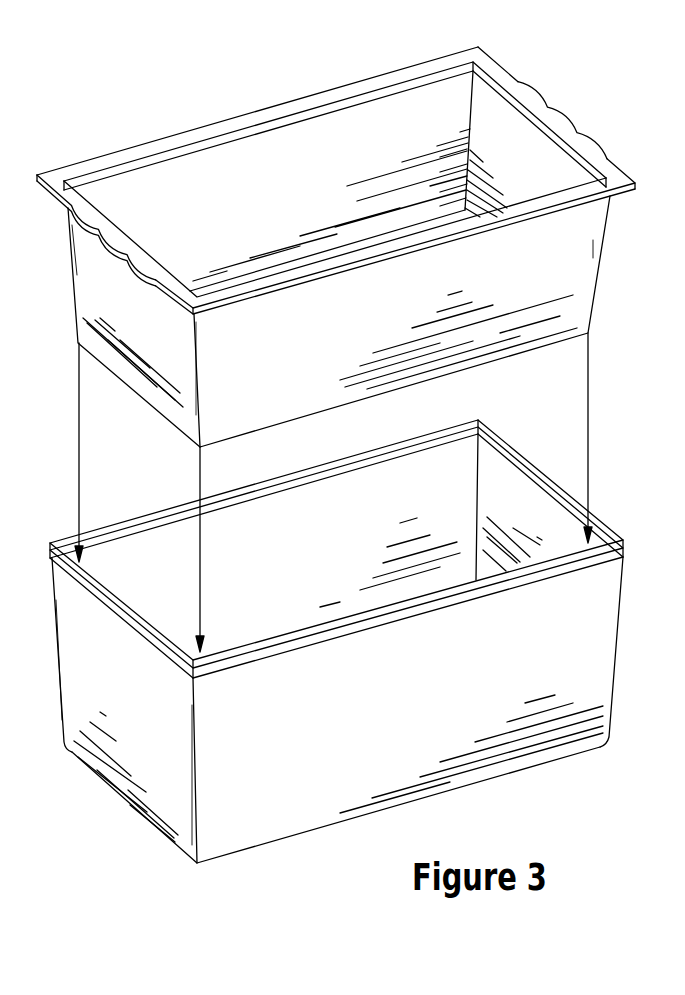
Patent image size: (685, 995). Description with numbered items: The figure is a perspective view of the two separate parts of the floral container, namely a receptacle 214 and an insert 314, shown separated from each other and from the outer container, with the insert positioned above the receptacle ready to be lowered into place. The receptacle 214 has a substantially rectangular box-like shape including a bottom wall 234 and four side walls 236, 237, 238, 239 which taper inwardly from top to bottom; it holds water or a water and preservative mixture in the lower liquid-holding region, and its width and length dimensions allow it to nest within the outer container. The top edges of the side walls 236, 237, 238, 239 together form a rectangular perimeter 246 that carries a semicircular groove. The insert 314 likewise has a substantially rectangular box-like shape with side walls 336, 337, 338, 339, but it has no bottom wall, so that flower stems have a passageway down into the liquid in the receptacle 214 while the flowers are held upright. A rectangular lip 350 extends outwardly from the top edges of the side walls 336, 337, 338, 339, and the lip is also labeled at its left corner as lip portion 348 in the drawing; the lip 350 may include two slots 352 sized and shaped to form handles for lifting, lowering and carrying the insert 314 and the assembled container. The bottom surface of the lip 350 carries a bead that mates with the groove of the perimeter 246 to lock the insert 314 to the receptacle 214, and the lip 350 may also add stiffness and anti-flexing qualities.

The receptacle 214 is at (498, 798).
The bottom wall 234 is at (240, 853).
The side wall 236 is at (143, 737).
The side wall 237 is at (163, 550).
The side wall 238 is at (512, 503).
The side wall 239 is at (528, 665).
The rectangular perimeter 246 is at (350, 448).
The insert 314 is at (290, 88).
The side wall 336 is at (165, 377).
The side wall 337 is at (207, 190).
The side wall 338 is at (506, 134).
The side wall 339 is at (510, 282).
The flange of insert 348 is at (68, 183).
The rectangular lip 350 is at (494, 57).
The slots 352 is at (118, 240).